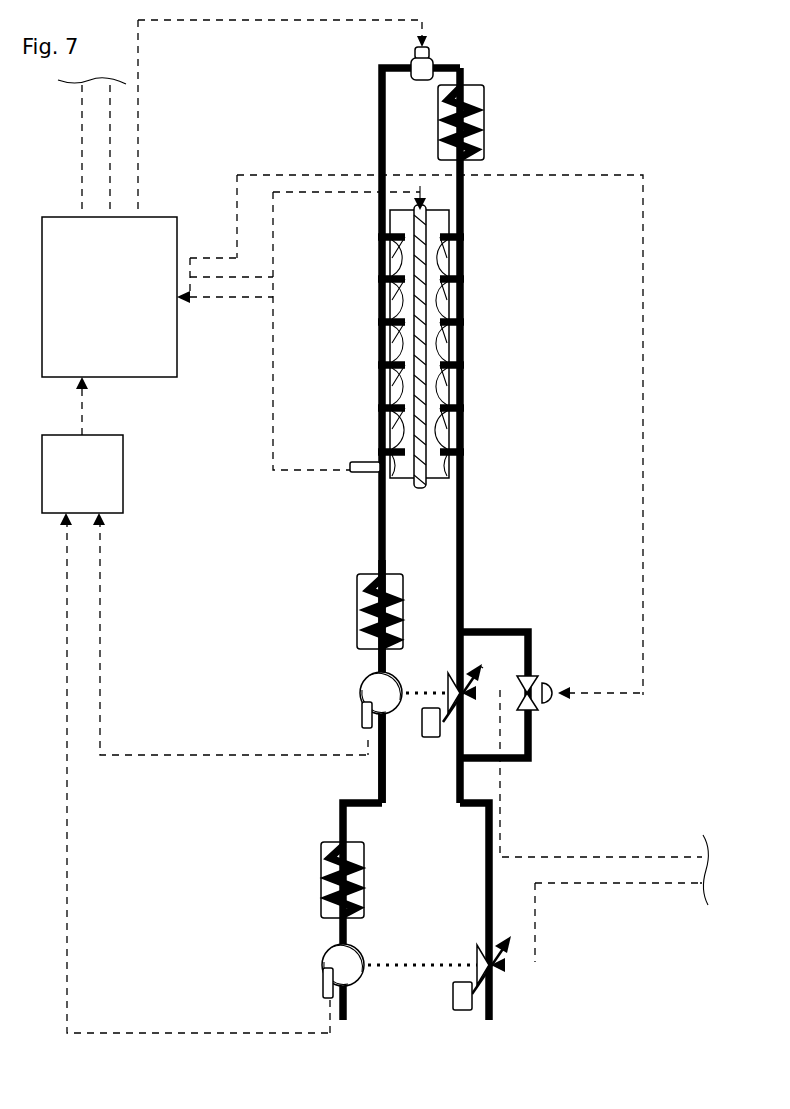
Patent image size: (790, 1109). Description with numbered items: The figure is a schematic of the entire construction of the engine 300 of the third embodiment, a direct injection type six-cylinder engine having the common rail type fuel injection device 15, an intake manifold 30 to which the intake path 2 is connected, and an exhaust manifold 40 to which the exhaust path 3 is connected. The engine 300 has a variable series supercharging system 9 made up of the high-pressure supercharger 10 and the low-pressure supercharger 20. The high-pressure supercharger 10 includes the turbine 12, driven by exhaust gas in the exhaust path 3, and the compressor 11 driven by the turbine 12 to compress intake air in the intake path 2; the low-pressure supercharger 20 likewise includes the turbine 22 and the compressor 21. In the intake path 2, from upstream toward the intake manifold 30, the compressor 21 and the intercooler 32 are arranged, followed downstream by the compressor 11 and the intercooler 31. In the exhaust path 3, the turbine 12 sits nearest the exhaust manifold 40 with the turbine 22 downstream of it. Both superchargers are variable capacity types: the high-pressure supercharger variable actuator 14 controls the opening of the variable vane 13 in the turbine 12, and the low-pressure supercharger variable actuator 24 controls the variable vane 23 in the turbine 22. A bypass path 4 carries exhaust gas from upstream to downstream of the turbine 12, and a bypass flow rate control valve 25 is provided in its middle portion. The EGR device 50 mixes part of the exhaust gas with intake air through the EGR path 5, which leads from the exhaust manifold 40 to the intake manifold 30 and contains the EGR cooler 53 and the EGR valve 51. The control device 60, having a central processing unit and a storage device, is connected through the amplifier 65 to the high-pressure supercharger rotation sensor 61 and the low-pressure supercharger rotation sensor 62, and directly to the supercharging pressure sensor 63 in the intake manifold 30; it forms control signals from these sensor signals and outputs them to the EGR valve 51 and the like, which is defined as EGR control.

The intake path 2 is at (368, 517).
The exhaust path 3 is at (474, 521).
The bypass path 4 is at (533, 648).
The EGR path 5 is at (368, 117).
The variable series supercharging system 9 is at (570, 835).
The high-pressure supercharger 10 is at (405, 744).
The compressor 11 is at (358, 694).
The turbine 12 is at (478, 708).
The variable vane 13 is at (483, 668).
The high-pressure supercharger variable actuator 14 is at (432, 740).
The common rail type fuel injection device 15 is at (452, 271).
The low-pressure supercharger 20 is at (410, 1006).
The compressor 21 is at (321, 966).
The turbine 22 is at (500, 976).
The variable vane 23 is at (506, 946).
The low-pressure supercharger variable actuator 24 is at (462, 1012).
The bypass flow rate control valve 25 is at (549, 704).
The intake manifold 30 is at (362, 346).
The intercooler 31 is at (355, 610).
The intercooler 32 is at (320, 886).
The exhaust manifold 40 is at (476, 345).
The EGR device 50 is at (513, 77).
The EGR valve 51 is at (410, 60).
The EGR cooler 53 is at (486, 114).
The control device 60 is at (118, 314).
The high-pressure supercharger rotation sensor 61 is at (358, 724).
The low-pressure supercharger rotation sensor 62 is at (320, 988).
The supercharging pressure sensor 63 is at (352, 462).
The amplifier 65 is at (95, 492).
The engine 300 is at (657, 96).